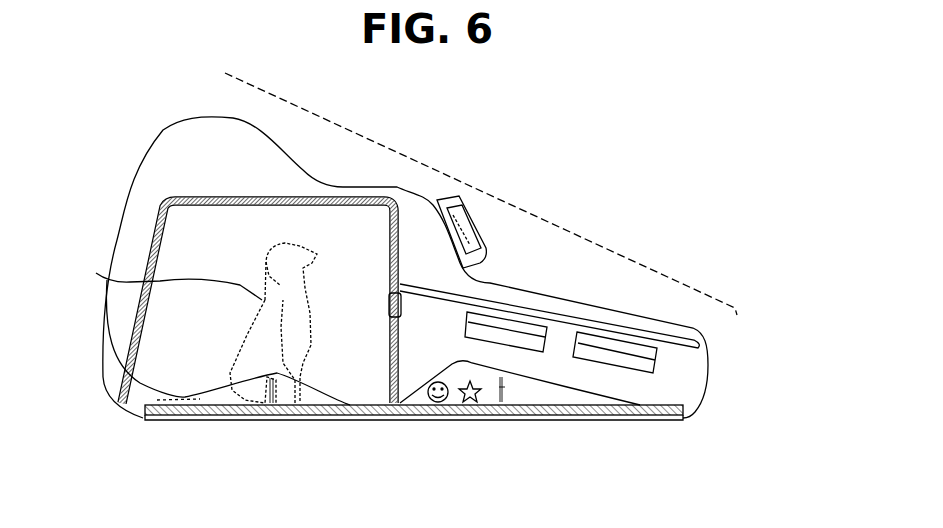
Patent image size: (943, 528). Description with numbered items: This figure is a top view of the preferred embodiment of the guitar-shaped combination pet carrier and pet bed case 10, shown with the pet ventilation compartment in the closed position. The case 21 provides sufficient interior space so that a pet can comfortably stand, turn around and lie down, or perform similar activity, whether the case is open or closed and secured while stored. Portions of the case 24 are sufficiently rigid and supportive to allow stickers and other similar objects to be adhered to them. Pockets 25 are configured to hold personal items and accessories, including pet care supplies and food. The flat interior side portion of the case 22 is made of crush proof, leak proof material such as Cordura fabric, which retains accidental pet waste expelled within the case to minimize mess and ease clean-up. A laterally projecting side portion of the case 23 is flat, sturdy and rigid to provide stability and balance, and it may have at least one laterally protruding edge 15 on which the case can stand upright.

The combination pet carrier and pet bed case 10 is at (478, 188).
The laterally protruding edge 15 is at (213, 421).
The closed and secured case 21 is at (110, 281).
The flat interior side portion of crush proof, leak proof material 22 is at (337, 421).
The laterally projecting side portion 23 is at (268, 421).
The rigid portions of the case for adhering stickers 24 is at (480, 405).
The pockets 25 is at (603, 352).